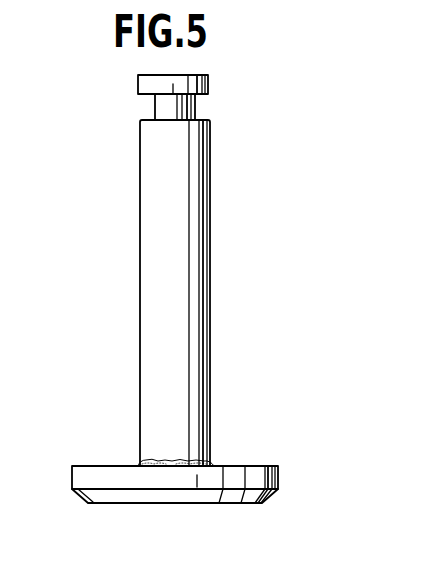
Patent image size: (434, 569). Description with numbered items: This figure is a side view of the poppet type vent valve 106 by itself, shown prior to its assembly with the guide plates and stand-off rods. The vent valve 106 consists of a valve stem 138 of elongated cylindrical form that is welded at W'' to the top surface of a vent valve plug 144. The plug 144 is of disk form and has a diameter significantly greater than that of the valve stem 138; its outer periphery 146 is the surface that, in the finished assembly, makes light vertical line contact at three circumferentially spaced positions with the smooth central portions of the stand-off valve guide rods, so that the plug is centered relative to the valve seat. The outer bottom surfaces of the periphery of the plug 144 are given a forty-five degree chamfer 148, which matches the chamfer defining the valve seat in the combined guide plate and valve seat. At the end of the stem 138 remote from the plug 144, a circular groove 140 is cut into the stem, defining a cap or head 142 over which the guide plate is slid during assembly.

The poppet type vent valve 106 is at (214, 197).
The valve stem 138 is at (190, 334).
The circular groove 140 is at (155, 106).
The cap or head 142 is at (208, 86).
The vent valve plug 144 is at (248, 465).
The periphery of the valve plug 146 is at (253, 477).
The chamfer 148 is at (207, 497).
The weld W'' is at (139, 436).